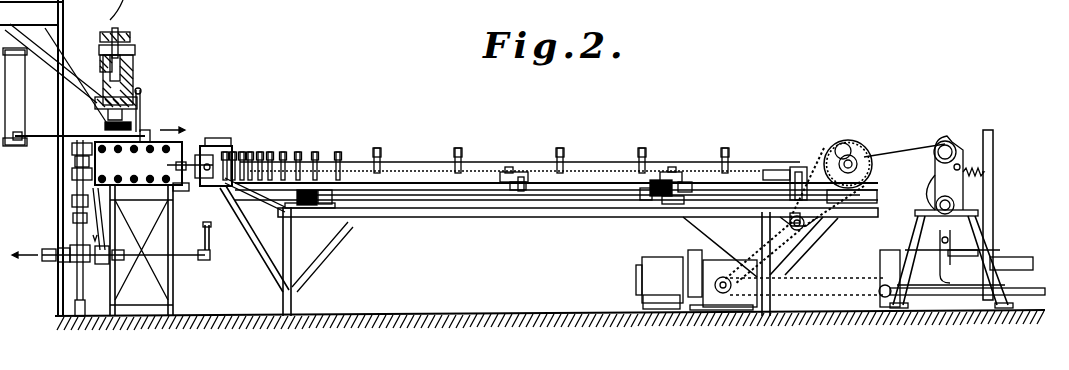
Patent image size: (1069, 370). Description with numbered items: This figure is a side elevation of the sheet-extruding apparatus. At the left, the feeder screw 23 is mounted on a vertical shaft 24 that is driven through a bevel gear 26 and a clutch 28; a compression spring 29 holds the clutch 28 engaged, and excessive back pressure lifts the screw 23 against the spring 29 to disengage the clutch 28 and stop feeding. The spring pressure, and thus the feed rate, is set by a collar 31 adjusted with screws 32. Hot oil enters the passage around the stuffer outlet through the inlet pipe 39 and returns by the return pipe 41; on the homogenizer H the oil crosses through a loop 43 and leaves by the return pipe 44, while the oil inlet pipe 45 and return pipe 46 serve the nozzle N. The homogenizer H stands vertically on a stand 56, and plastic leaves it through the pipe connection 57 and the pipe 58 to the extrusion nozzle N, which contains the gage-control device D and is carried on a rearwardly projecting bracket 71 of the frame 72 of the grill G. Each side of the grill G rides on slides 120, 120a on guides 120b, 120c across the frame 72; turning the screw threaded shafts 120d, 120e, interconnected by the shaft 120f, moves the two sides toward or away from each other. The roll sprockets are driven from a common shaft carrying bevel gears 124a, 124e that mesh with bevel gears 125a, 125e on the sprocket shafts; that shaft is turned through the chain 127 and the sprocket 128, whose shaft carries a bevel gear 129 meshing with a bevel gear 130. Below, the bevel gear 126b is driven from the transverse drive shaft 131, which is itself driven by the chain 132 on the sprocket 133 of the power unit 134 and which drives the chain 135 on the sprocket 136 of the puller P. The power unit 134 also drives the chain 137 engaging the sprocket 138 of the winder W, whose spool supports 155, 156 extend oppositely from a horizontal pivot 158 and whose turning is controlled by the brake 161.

The collar 31 is at (101, 62).
The screws 32 is at (100, 72).
The clutch 28 is at (131, 37).
The bevel gear 26 is at (127, 50).
The compression spring 29 is at (135, 73).
The vertical shaft 24 is at (97, 108).
The pipe 58 is at (196, 160).
The oil inlet pipe 45 is at (230, 138).
The gage control device D is at (210, 155).
The extrusion nozzle N is at (232, 148).
The screw 23 is at (133, 127).
The homogenizer H is at (129, 165).
The loop 43 is at (78, 141).
The inlet pipe 39 is at (74, 203).
The return pipe 44 is at (97, 222).
The return pipe 41 is at (116, 204).
The pipe connection 57 is at (187, 191).
The return pipe 46 is at (186, 252).
The bracket 71 is at (241, 226).
The stand 56 is at (172, 278).
The slide 120 is at (295, 198).
The guide 120b is at (283, 221).
The screw threaded shaft 120d is at (330, 205).
The frame 72 is at (296, 212).
The shaft 120f is at (440, 197).
The grill G is at (403, 181).
The bevel gear 125a is at (503, 173).
The bevel gear 124a is at (520, 191).
The screw threaded shaft 120e is at (657, 189).
The guide 120c is at (683, 198).
The bevel gear 125e is at (663, 178).
The bevel gear 124e is at (690, 189).
The slide 120a is at (681, 202).
The bevel gear 130 is at (764, 172).
The bevel gear 129 is at (782, 172).
The chain 127 is at (797, 172).
The bevel gear 126b is at (783, 214).
The chain 135 is at (850, 203).
The puller P is at (845, 140).
The sprocket 136 is at (858, 141).
The transverse drive shaft 131 is at (804, 227).
The chain 137 is at (800, 274).
The sprocket 138 is at (857, 288).
The chain 132 is at (727, 276).
The power unit 134 is at (622, 272).
The sprocket 133 is at (727, 295).
The spool support 155 is at (947, 138).
The winder W is at (996, 147).
The brake 161 is at (985, 174).
The horizontal pivot 158 is at (952, 201).
The spool support 156 is at (960, 254).
The sprocket 128 is at (700, 0).